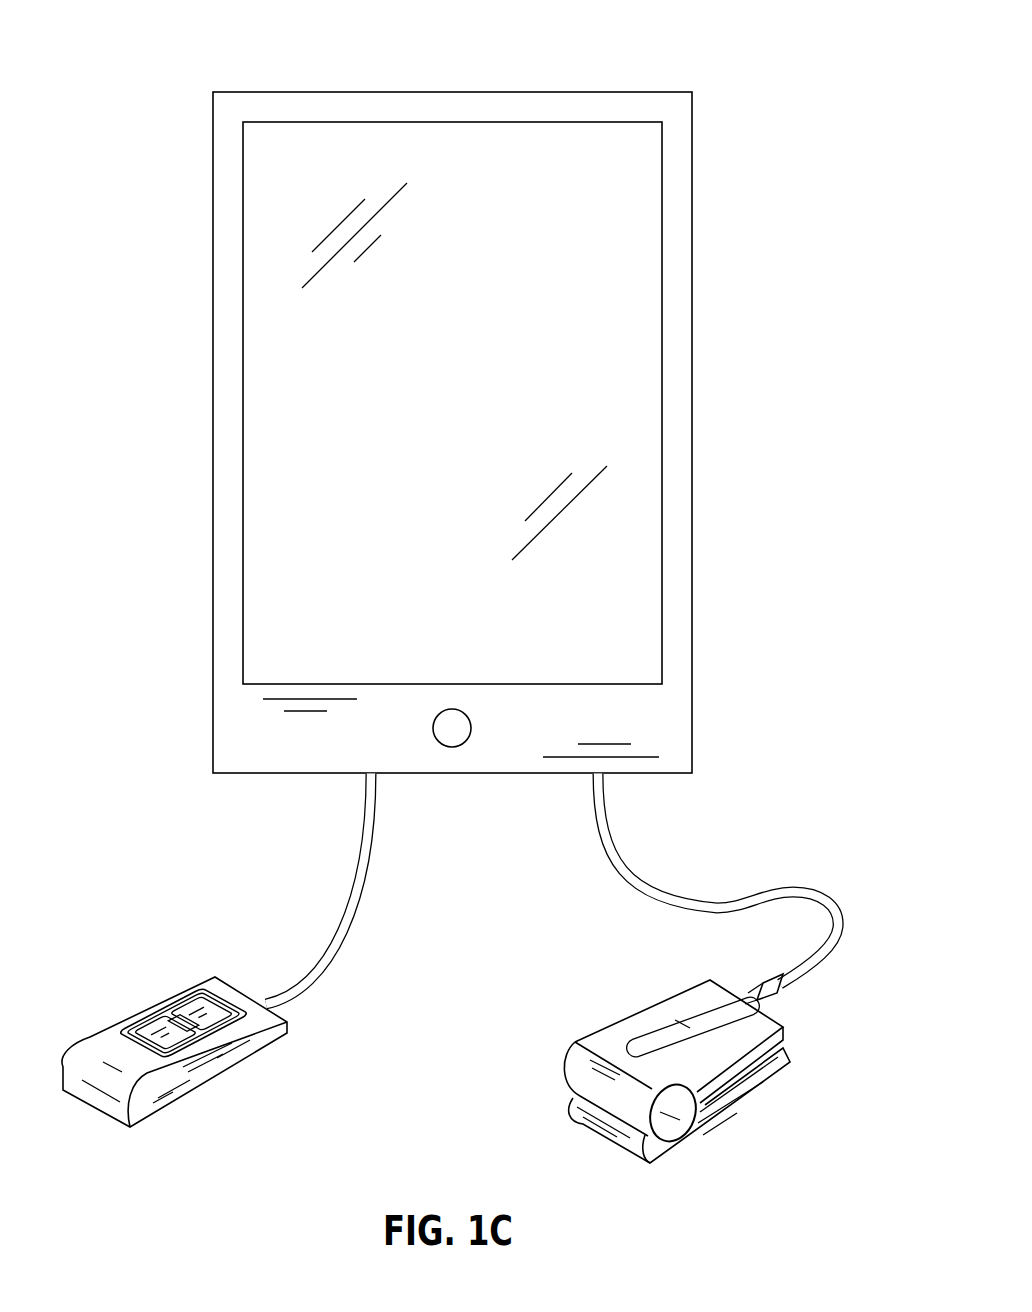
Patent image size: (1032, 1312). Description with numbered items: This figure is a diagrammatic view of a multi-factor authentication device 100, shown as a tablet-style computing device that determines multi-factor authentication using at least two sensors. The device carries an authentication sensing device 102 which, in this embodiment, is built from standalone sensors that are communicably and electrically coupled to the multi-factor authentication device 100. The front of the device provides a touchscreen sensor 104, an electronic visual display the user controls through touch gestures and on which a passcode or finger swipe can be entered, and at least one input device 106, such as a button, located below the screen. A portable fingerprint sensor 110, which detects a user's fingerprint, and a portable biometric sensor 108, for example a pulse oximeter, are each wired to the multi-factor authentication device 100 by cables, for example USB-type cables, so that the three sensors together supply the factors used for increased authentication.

The multi-factor authentication device 100 is at (749, 41).
The authentication sensing device 102 is at (728, 792).
The touchscreen sensor 104 is at (635, 373).
The input device 106 is at (453, 730).
The biometric sensor 108 is at (725, 1100).
The fingerprint sensor 110 is at (198, 1077).